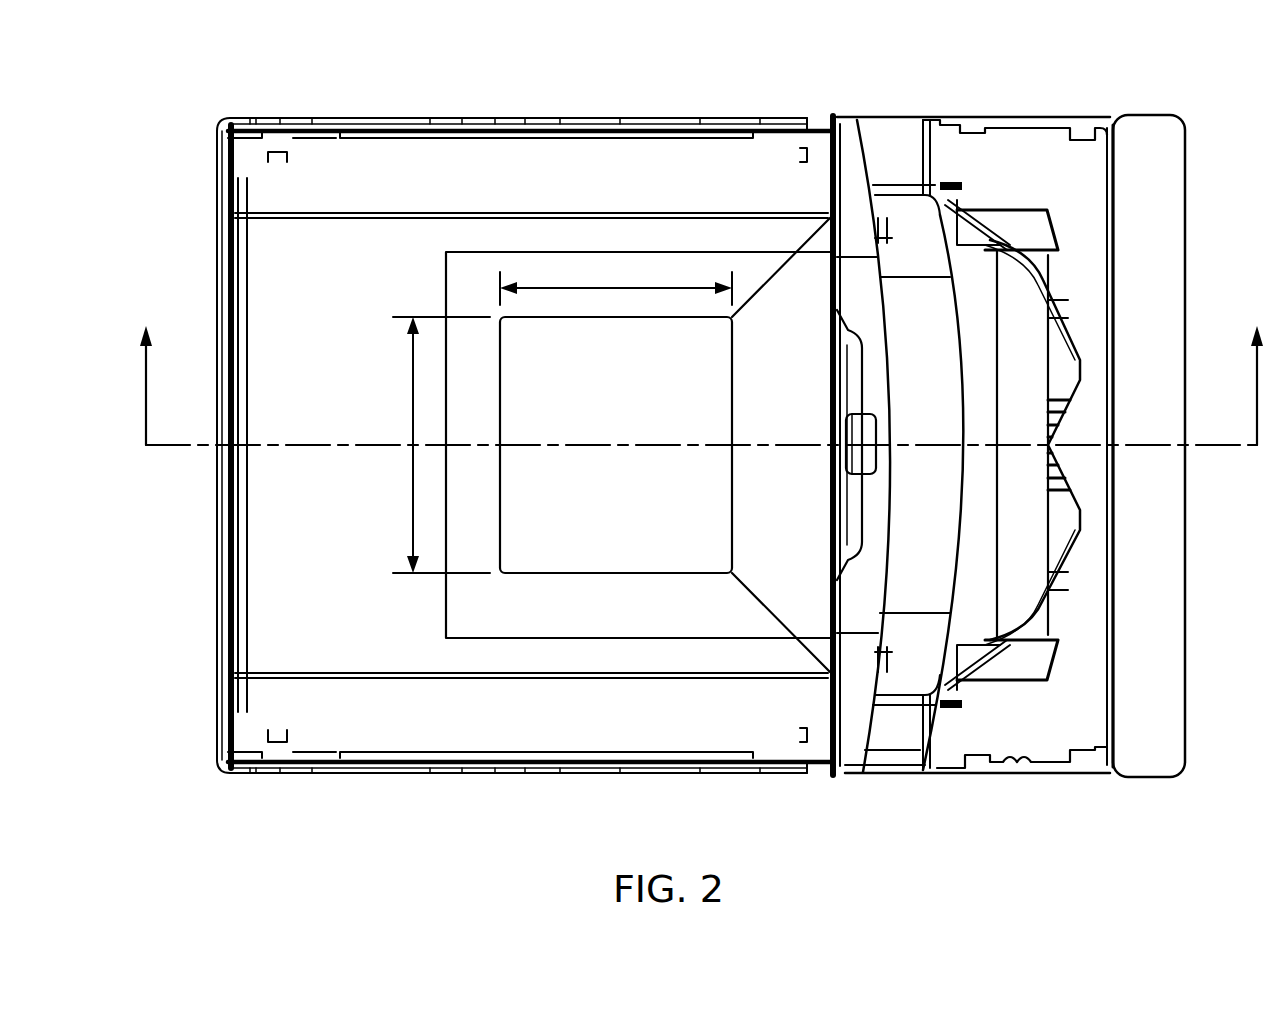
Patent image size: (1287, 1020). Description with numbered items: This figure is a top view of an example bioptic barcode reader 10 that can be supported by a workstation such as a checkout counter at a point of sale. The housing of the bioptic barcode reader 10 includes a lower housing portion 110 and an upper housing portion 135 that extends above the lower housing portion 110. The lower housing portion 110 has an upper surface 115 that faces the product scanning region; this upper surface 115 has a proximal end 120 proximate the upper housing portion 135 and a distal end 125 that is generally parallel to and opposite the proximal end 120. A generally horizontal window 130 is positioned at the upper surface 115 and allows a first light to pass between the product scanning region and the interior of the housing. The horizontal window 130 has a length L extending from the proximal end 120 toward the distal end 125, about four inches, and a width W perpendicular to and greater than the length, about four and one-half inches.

The bioptic barcode reader 10 is at (223, 63).
The lower housing portion 110 is at (331, 772).
The upper surface 115 is at (356, 308).
The proximal end 120 is at (830, 195).
The distal end 125 is at (236, 170).
The horizontal window 130 is at (636, 432).
The upper housing portion 135 is at (893, 733).